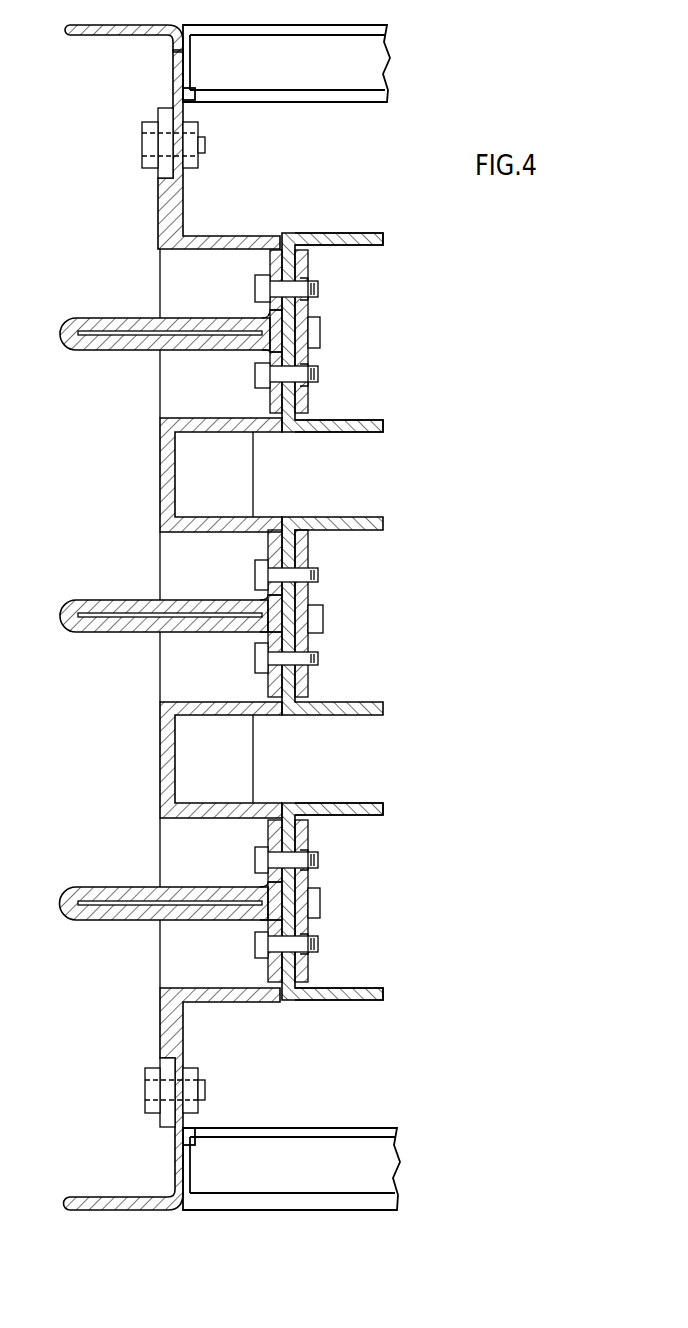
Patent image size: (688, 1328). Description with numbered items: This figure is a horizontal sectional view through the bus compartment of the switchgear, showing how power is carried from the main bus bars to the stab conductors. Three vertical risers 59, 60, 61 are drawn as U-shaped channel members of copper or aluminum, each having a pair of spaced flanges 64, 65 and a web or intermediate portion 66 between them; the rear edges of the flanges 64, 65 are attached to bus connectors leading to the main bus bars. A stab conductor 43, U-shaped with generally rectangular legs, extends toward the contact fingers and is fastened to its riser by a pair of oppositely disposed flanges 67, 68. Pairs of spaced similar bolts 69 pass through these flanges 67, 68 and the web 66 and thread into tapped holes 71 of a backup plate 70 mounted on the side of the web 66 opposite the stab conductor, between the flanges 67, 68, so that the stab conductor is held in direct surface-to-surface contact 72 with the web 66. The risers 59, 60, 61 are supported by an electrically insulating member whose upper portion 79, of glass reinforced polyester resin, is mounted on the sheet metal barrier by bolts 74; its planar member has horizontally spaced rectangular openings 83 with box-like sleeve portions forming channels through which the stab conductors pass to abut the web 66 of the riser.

The stab conductor 43 is at (72, 346).
The vertical riser 59 is at (300, 240).
The vertical riser 60 is at (320, 517).
The vertical riser 61 is at (302, 805).
The flange 64 is at (357, 236).
The flange 65 is at (378, 432).
The web 66 is at (271, 266).
The flange 67 is at (276, 248).
The flange 68 is at (270, 400).
The bolt 69 is at (320, 290).
The backup plate 70 is at (320, 322).
The tapped hole 71 is at (306, 282).
The surface-to-surface contact 72 is at (258, 363).
The bolt 74 is at (146, 146).
The upper portion 79 is at (165, 482).
The rectangular opening 83 is at (170, 250).